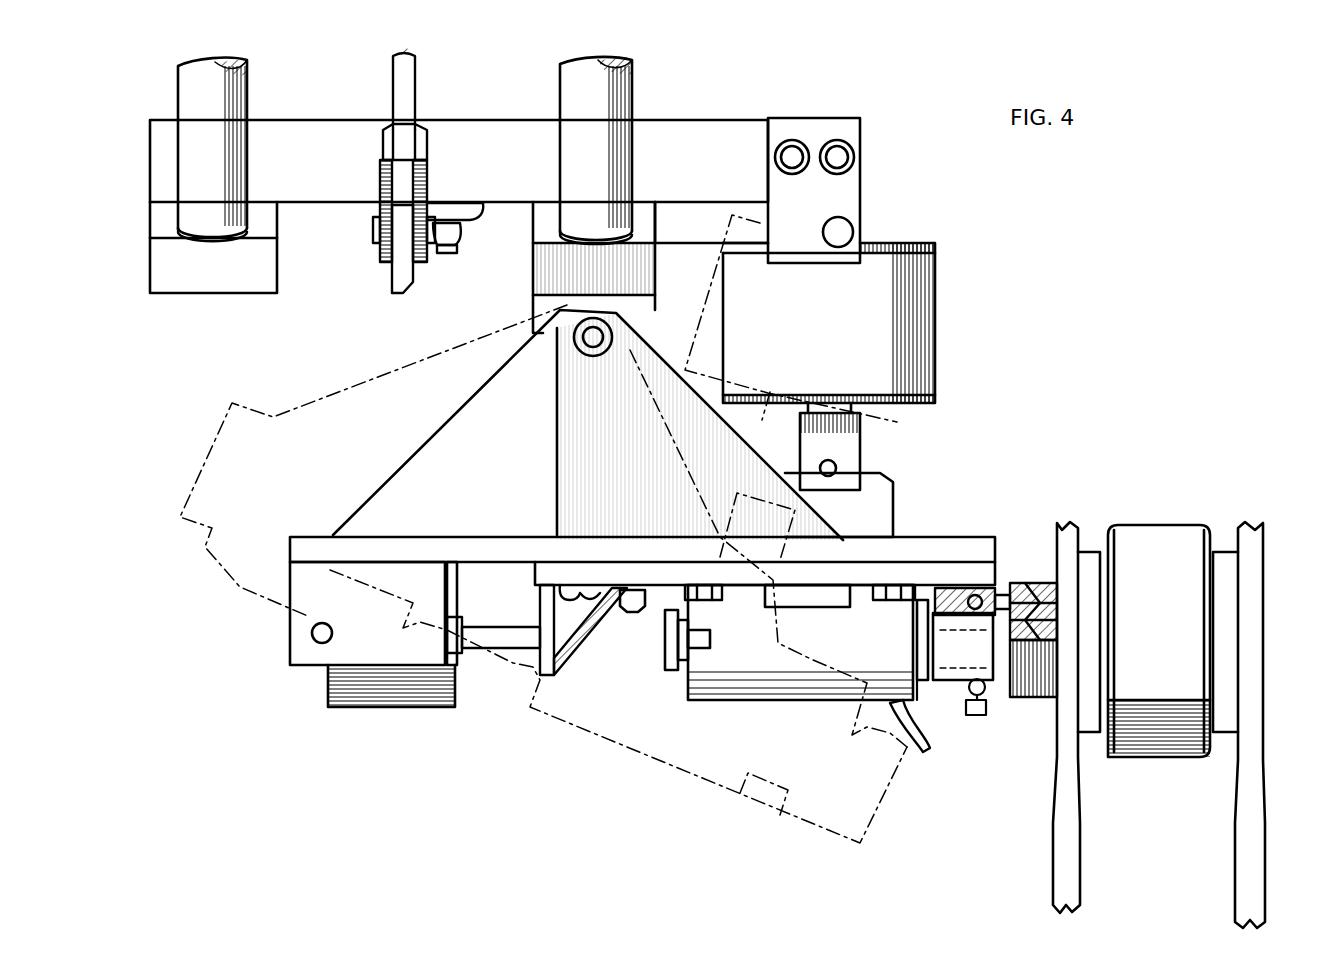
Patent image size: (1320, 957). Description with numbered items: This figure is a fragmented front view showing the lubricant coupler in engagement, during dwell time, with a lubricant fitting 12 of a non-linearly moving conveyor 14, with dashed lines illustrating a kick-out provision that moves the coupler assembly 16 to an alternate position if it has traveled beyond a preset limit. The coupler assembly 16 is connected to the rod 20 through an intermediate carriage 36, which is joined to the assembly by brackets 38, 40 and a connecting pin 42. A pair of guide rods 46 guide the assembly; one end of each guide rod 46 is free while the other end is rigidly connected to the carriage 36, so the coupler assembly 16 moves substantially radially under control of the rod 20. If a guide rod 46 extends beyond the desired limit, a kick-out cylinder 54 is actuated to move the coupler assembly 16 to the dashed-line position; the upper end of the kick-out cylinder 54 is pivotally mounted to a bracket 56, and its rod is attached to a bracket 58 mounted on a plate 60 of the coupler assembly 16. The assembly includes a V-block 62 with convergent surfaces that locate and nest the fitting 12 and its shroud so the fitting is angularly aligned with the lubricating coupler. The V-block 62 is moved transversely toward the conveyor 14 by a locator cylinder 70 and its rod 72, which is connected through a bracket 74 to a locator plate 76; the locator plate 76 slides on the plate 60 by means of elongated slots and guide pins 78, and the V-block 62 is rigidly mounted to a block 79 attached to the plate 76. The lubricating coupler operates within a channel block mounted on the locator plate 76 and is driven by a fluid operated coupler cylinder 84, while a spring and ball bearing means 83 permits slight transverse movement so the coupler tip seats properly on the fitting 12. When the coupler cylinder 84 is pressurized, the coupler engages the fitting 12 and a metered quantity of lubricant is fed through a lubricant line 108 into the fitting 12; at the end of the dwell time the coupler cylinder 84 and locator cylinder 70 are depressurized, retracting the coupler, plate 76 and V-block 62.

The lubricant fitting 12 is at (1047, 583).
The non-linearly moving conveyor 14 is at (1062, 533).
The coupler assembly 16 is at (1043, 450).
The rod 20 is at (413, 78).
The carriage 36 is at (345, 128).
The bracket 38 is at (540, 271).
The bracket 40 is at (480, 418).
The connecting pin 42 is at (596, 347).
The guide rods 46 is at (183, 85).
The kick-out cylinder 54 is at (913, 280).
The bracket 56 is at (853, 177).
The bracket 58 is at (878, 481).
The plate 60 is at (977, 547).
The V-block 62 is at (1037, 697).
The locator cylinder 70 is at (337, 673).
The rod 72 is at (492, 637).
The bracket 74 is at (540, 603).
The locator plate 76 is at (917, 577).
The guide pins 78 is at (700, 594).
The block 79 is at (978, 718).
The spring and ball bearing means 83 is at (923, 695).
The coupler cylinder 84 is at (707, 686).
The lubricant line 108 is at (930, 757).